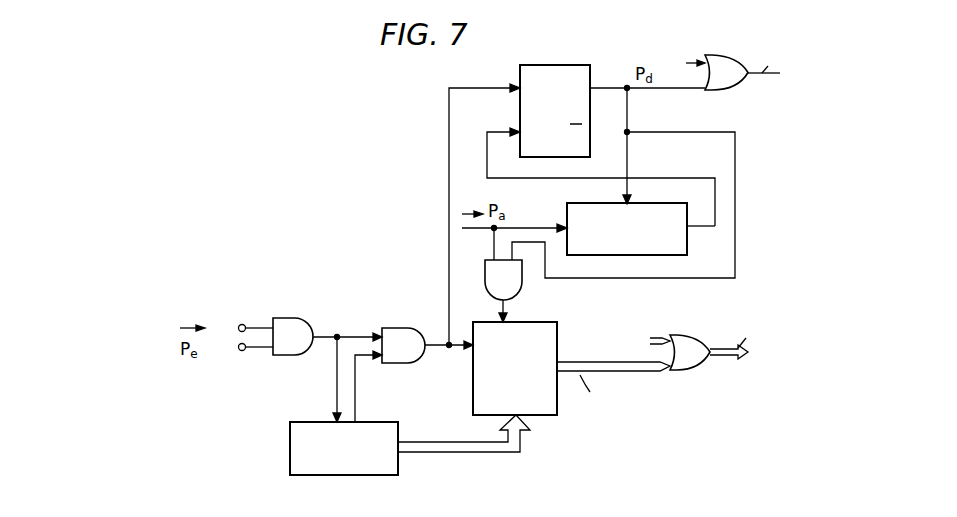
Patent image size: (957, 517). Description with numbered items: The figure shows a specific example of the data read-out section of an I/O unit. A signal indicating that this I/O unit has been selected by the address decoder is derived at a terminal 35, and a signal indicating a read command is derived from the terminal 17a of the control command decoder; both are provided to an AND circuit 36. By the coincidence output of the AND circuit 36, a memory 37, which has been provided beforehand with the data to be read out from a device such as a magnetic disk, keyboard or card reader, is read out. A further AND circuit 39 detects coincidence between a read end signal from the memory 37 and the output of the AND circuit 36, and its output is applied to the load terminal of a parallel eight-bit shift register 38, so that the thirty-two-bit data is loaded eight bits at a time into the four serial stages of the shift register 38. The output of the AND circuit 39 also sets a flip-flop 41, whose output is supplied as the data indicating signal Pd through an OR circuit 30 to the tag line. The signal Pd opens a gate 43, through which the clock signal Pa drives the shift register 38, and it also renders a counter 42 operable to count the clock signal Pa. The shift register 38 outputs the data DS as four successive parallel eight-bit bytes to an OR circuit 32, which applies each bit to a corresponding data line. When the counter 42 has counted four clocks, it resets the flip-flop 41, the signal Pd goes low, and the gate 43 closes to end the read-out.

The flip-flop 41 is at (575, 65).
The OR circuit 30 is at (744, 60).
The counter 42 is at (663, 257).
The gate 43 is at (488, 284).
The terminal 35 is at (238, 325).
The terminal 17a is at (238, 350).
The AND circuit 36 is at (310, 317).
The AND circuit 39 is at (402, 326).
The memory 37 is at (312, 421).
The parallel 8-bit shift register 38 is at (472, 388).
The OR circuit 32 is at (693, 335).